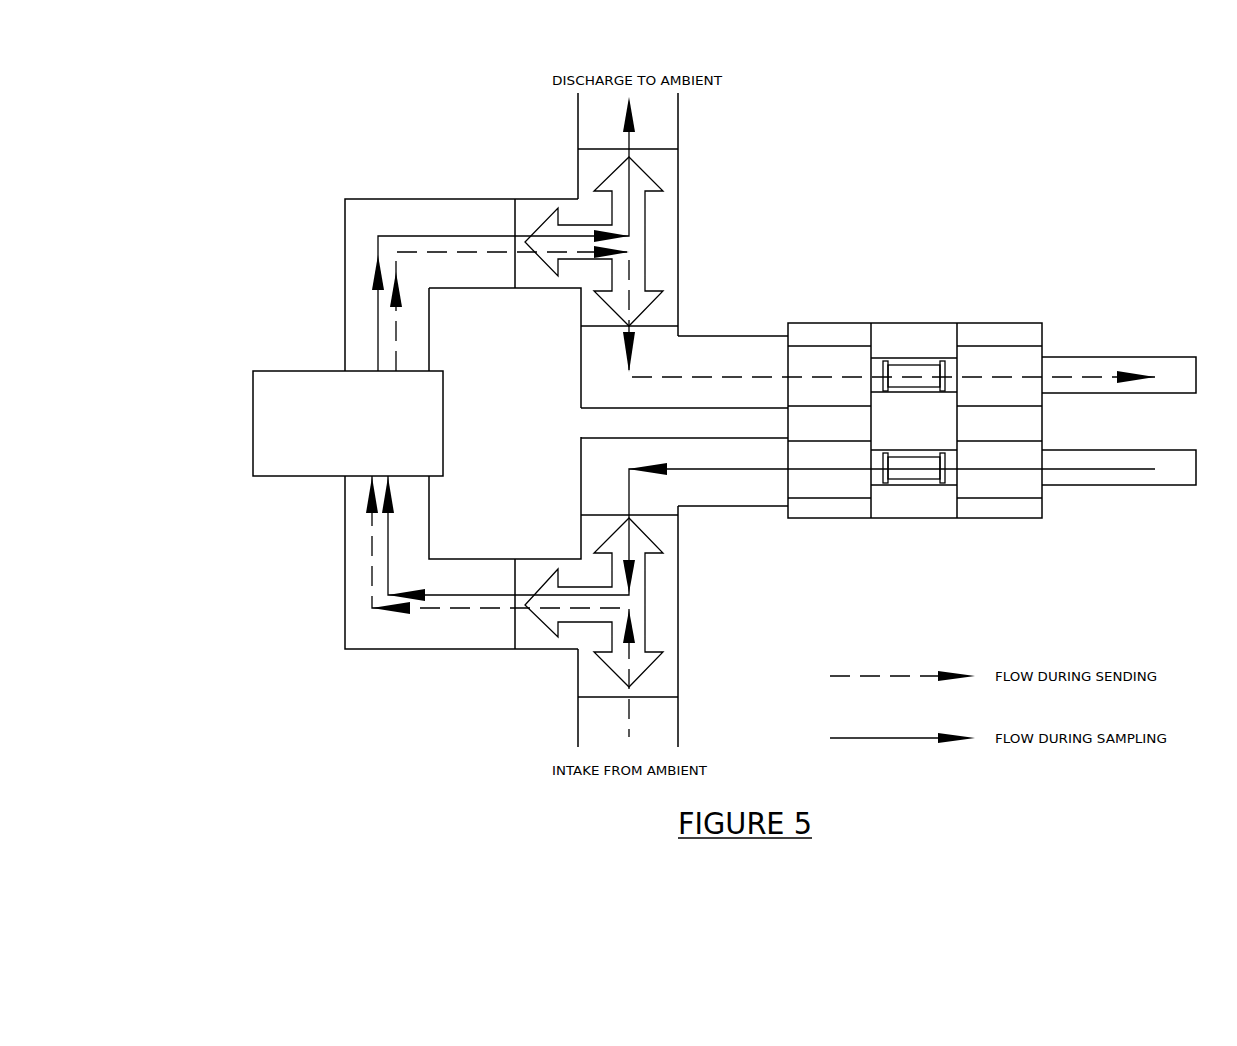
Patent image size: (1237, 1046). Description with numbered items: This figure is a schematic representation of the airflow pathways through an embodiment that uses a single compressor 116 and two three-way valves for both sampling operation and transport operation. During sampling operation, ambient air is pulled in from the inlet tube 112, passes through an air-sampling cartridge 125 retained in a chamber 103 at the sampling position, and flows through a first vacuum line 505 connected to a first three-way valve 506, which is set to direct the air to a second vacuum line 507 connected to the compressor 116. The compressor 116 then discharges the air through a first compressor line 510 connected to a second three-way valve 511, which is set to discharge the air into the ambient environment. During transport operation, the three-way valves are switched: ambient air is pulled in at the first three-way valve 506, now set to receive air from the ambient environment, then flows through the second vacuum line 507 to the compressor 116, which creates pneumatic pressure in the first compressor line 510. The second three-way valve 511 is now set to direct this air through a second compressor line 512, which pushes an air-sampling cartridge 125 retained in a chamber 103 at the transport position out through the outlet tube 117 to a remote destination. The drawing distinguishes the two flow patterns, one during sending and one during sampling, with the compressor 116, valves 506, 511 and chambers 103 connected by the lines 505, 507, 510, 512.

The chamber 103 is at (950, 358).
The inlet tube 112 is at (1108, 487).
The compressor 116 is at (287, 369).
The outlet tube 117 is at (1142, 356).
The air-sampling cartridge 125 is at (902, 359).
The first vacuum line 505 is at (710, 507).
The first three-way valve 506 is at (607, 670).
The second vacuum line 507 is at (387, 650).
The first compressor line 510 is at (387, 197).
The second three-way valve 511 is at (598, 183).
The second compressor line 512 is at (725, 336).